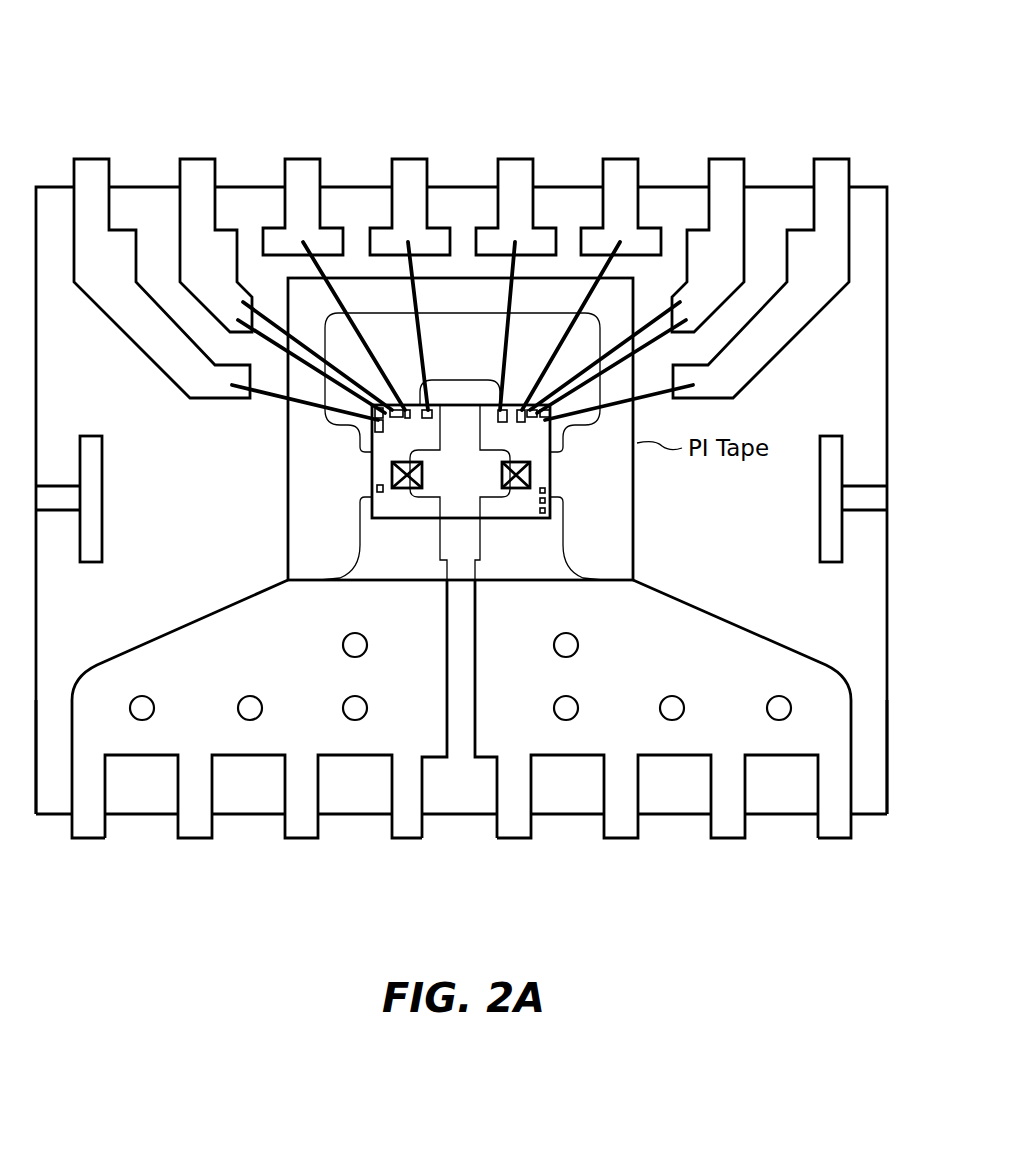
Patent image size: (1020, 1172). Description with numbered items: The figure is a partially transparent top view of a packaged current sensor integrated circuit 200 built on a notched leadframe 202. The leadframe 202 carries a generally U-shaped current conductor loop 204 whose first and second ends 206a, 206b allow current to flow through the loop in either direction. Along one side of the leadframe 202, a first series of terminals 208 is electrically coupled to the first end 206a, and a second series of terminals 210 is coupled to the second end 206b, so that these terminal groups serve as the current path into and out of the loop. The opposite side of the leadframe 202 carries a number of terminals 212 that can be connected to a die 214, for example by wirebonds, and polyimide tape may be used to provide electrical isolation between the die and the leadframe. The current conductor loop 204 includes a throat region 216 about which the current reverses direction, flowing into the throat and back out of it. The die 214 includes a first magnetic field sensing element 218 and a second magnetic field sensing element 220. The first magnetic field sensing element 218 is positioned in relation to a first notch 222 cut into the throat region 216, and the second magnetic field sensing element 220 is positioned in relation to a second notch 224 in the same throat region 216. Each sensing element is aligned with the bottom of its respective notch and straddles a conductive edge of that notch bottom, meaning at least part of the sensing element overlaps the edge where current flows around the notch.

The packaged current sensor integrated circuit 200 is at (160, 38).
The leadframe 202 is at (738, 630).
The current conductor loop 204 is at (226, 672).
The first end 206a is at (72, 785).
The second end 206b is at (851, 785).
The first series of terminals 208 is at (410, 838).
The second series of terminals 210 is at (830, 838).
The terminals 212 is at (407, 160).
The die 214 is at (532, 523).
The throat region 216 is at (482, 484).
The first magnetic field sensing element 218 is at (392, 473).
The second magnetic field sensing element 220 is at (530, 474).
The first notch 222 is at (432, 490).
The second notch 224 is at (488, 492).